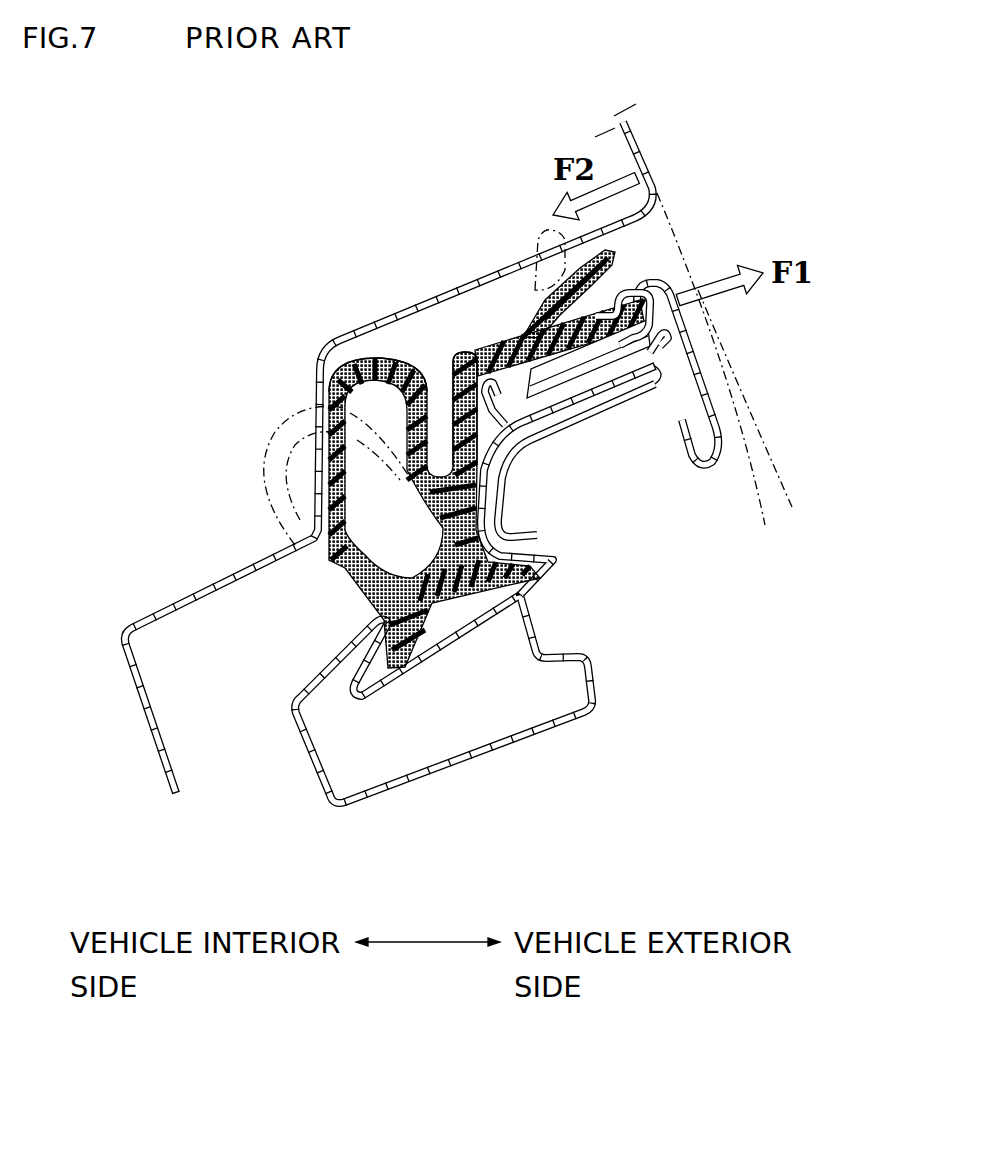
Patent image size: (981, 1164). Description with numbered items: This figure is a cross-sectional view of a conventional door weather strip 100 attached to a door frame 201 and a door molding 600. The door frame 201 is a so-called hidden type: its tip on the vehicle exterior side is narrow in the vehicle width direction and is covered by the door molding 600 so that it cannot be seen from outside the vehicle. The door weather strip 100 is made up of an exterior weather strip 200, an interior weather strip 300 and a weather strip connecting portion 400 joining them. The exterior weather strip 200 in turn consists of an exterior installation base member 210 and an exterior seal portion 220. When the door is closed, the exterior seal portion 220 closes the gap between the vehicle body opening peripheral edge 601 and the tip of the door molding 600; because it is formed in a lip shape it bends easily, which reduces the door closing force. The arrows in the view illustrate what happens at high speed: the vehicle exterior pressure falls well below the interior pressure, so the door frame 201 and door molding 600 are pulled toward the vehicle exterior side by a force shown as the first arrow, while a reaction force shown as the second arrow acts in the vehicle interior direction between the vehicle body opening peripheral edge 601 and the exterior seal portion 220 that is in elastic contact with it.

The door weather strip 100 is at (360, 337).
The exterior weather strip 200 is at (548, 325).
The door frame 201 is at (500, 760).
The exterior installation base member 210 is at (478, 345).
The exterior seal portion 220 is at (525, 335).
The interior weather strip 300 is at (343, 490).
The weather strip connecting portion 400 is at (453, 420).
The door molding 600 is at (702, 358).
The vehicle body opening peripheral edge 601 is at (397, 357).